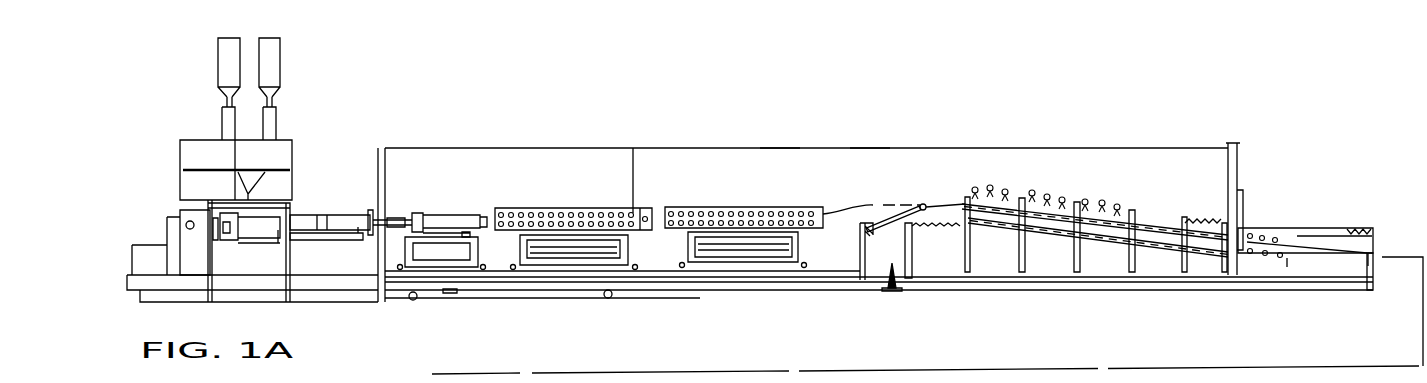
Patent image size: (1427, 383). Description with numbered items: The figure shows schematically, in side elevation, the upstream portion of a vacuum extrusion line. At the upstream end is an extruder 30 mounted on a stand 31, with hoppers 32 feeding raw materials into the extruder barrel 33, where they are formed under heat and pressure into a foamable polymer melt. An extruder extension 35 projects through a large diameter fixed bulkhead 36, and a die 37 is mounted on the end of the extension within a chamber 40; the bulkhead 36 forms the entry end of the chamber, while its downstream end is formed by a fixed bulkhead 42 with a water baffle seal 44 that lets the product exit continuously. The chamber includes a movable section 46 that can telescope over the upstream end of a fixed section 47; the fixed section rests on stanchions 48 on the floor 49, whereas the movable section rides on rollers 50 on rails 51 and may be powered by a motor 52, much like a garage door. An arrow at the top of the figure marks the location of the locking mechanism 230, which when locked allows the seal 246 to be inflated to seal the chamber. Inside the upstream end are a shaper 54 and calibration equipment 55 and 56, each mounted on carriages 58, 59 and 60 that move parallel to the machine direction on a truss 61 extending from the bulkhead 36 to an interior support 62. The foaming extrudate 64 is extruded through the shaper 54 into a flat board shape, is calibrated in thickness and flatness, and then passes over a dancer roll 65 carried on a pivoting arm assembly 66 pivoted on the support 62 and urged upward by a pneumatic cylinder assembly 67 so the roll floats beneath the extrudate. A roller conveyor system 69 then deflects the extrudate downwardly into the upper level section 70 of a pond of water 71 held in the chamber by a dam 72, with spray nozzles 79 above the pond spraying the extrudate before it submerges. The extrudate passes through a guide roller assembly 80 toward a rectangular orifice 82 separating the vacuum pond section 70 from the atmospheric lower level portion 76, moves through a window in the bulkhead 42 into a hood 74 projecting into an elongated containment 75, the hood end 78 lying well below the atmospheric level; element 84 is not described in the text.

The extruder 30 is at (300, 210).
The stand 31 is at (358, 280).
The hoppers 32 is at (226, 68).
The extruder barrel 33 is at (337, 218).
The extruder extension 35 is at (392, 217).
The fixed bulkhead 36 is at (373, 158).
The die 37 is at (408, 217).
The chamber 40 is at (778, 145).
The fixed bulkhead 42 is at (1242, 178).
The water baffle seal 44 is at (1257, 220).
The movable section 46 is at (488, 148).
The fixed section 47 is at (870, 148).
The stanchions 48 is at (895, 290).
The floor 49 is at (985, 290).
The rollers 50 is at (413, 300).
The rails 51 is at (660, 293).
The motor 52 is at (455, 292).
The shaper 54 is at (458, 213).
The calibration equipment 55 is at (575, 213).
The calibration equipment 56 is at (742, 207).
The carriage 58 is at (467, 265).
The carriage 59 is at (570, 262).
The carriage 60 is at (733, 260).
The truss 61 is at (787, 272).
The interior support 62 is at (865, 262).
The foaming extrudate 64 is at (837, 210).
The dancer roll 65 is at (923, 207).
The pivoting arm assembly 66 is at (885, 220).
The pneumatic cylinder assembly 67 is at (865, 234).
The roller conveyor system 69 is at (1040, 200).
The upper level section 70 is at (1202, 218).
The pond of water 71 is at (1103, 260).
The dam 72 is at (914, 262).
The hood 74 is at (1323, 237).
The elongated containment 75 is at (1317, 240).
The atmospheric lower level portion 76 is at (1363, 228).
The hood end 78 is at (1373, 265).
The spray nozzles 79 is at (990, 185).
The guide roller assembly 80 is at (1267, 257).
The window or orifice 82 is at (1295, 253).
The end guide 84 is at (1363, 246).
The locking mechanism 230 is at (642, 145).
The seal 246 is at (387, 140).